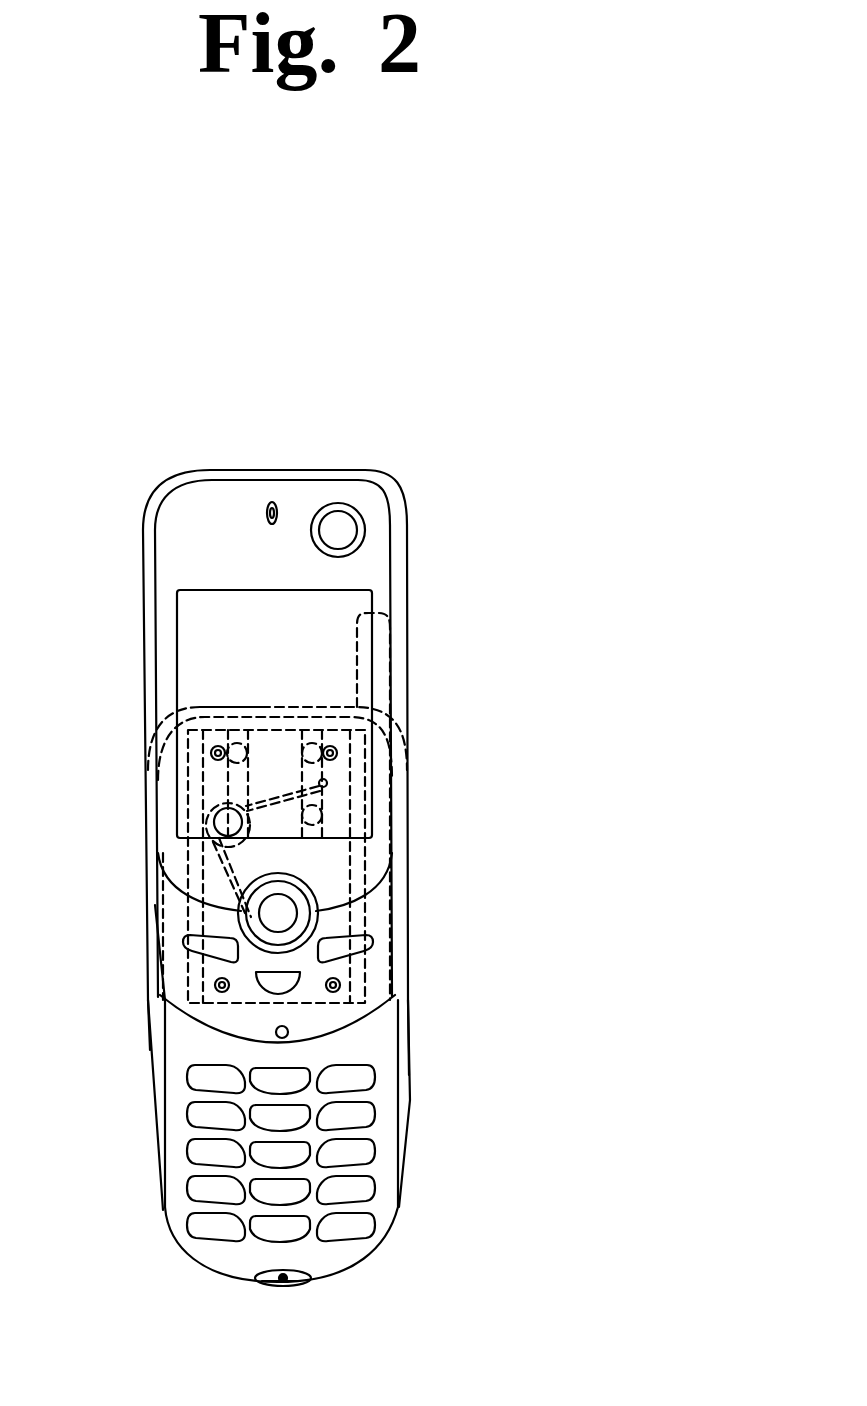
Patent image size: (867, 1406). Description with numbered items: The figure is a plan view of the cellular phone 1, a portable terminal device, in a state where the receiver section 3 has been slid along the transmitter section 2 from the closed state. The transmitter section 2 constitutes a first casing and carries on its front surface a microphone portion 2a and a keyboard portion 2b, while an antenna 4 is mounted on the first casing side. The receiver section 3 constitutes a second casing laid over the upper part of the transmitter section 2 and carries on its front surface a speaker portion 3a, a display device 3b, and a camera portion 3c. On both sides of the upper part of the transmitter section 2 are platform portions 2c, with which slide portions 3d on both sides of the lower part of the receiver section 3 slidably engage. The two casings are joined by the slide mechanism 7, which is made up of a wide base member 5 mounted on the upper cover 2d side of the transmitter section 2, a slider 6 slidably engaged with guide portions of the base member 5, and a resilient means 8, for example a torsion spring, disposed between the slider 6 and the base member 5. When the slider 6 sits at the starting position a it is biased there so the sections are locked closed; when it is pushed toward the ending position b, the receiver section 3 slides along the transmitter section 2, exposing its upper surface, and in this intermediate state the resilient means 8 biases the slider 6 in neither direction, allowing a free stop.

The cellular phone 1 is at (275, 876).
The transmitter section 2 is at (148, 1097).
The microphone portion 2a is at (295, 1283).
The keyboard portion 2b is at (207, 1190).
The platform portion 2c is at (155, 1050).
The upper cover 2d is at (383, 1040).
The receiver section 3 is at (140, 645).
The speaker portion 3a is at (277, 505).
The display device 3b is at (292, 651).
The camera portion 3c is at (358, 516).
The slide portion 3d is at (147, 712).
The antenna 4 is at (390, 613).
The base member 5 is at (340, 880).
The slider 6 is at (280, 747).
The slide mechanism 7 is at (214, 916).
The resilient means 8 is at (237, 865).
The starting position a is at (247, 1285).
The ending position b is at (233, 699).